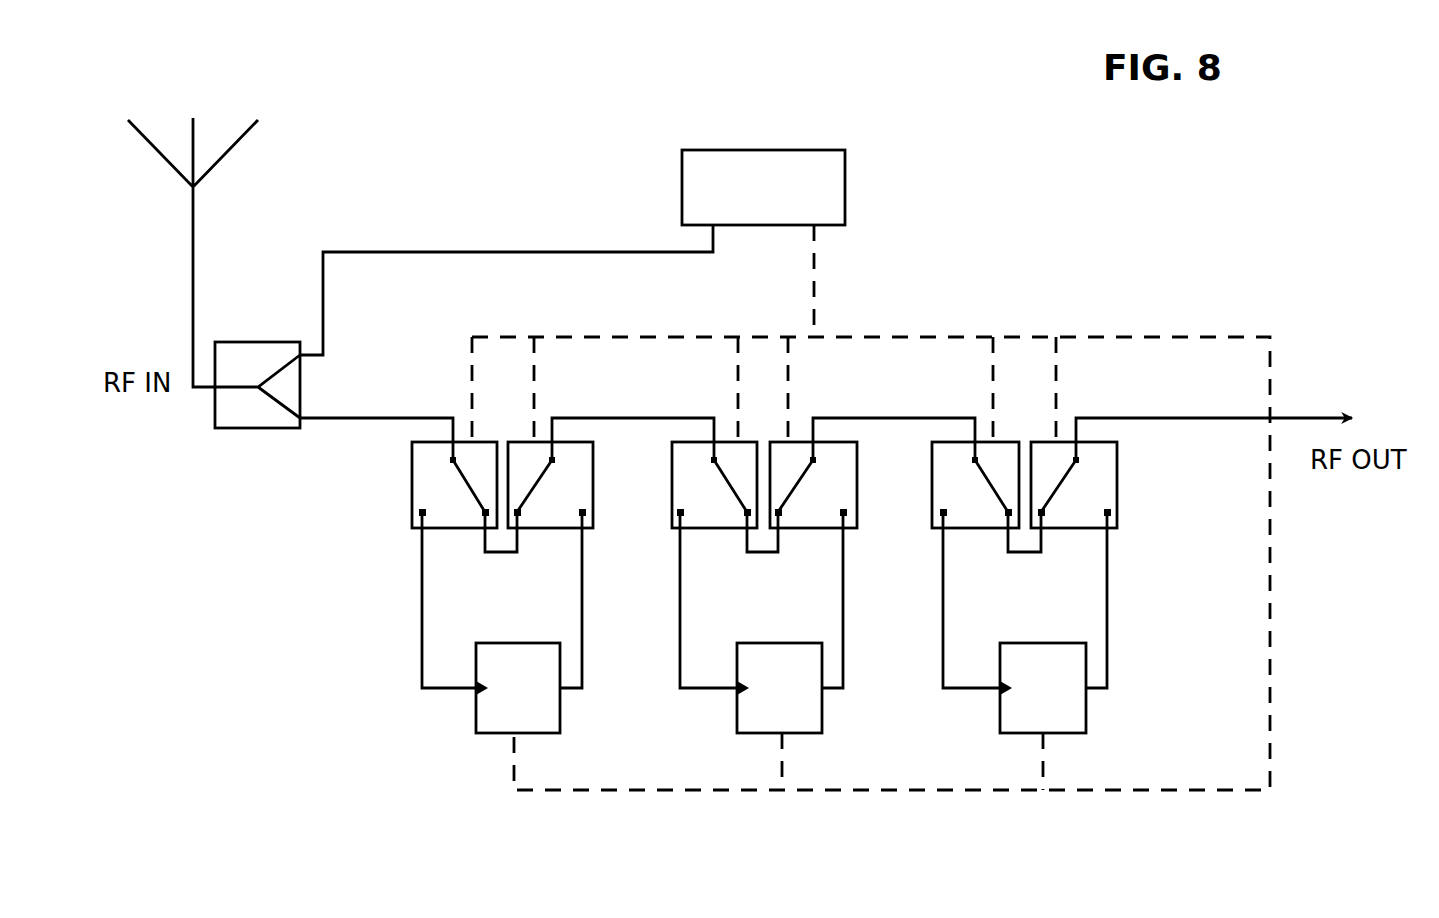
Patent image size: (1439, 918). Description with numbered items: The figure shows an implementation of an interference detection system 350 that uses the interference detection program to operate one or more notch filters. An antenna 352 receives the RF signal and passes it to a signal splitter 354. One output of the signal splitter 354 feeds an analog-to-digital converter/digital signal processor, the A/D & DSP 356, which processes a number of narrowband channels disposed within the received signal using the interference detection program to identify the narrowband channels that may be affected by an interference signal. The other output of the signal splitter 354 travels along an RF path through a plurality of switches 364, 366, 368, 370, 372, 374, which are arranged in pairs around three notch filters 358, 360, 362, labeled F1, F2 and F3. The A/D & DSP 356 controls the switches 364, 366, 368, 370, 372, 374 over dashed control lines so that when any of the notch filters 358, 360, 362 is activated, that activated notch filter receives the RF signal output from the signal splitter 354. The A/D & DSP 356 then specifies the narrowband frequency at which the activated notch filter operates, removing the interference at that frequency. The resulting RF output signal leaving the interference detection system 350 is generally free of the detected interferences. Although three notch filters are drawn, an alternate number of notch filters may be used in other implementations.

The interference detection system 350 is at (303, 754).
The antenna 352 is at (230, 135).
The signal splitter 354 is at (200, 408).
The analog-to-digital converter/digital signal processor (A/D & DSP) 356 is at (858, 160).
The notch filter 358 is at (470, 714).
The notch filter 360 is at (830, 724).
The notch filter 362 is at (1094, 724).
The switch 364 is at (398, 483).
The switch 366 is at (546, 540).
The switch 368 is at (701, 535).
The switch 370 is at (865, 502).
The switch 372 is at (972, 536).
The switch 374 is at (1129, 504).